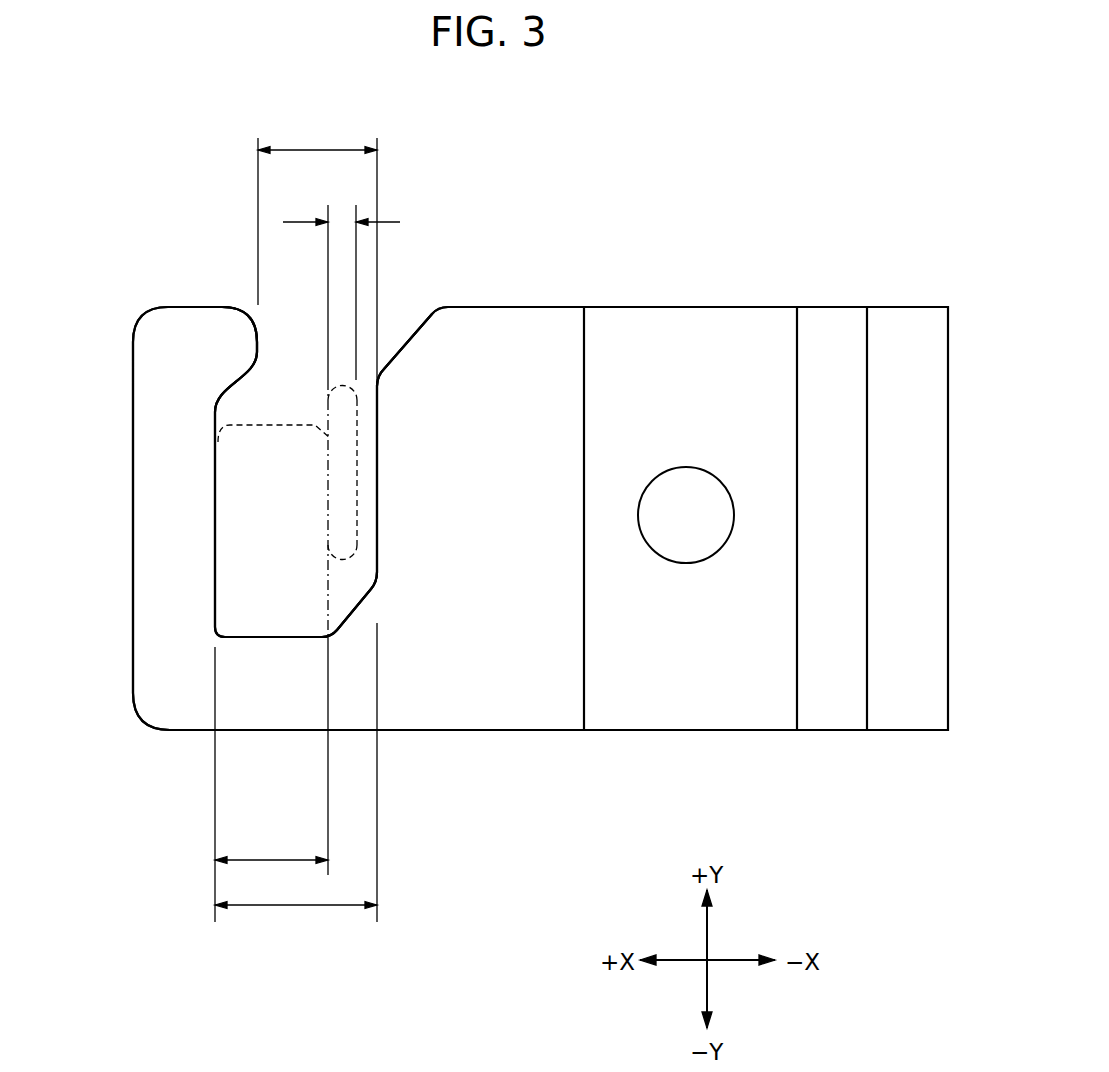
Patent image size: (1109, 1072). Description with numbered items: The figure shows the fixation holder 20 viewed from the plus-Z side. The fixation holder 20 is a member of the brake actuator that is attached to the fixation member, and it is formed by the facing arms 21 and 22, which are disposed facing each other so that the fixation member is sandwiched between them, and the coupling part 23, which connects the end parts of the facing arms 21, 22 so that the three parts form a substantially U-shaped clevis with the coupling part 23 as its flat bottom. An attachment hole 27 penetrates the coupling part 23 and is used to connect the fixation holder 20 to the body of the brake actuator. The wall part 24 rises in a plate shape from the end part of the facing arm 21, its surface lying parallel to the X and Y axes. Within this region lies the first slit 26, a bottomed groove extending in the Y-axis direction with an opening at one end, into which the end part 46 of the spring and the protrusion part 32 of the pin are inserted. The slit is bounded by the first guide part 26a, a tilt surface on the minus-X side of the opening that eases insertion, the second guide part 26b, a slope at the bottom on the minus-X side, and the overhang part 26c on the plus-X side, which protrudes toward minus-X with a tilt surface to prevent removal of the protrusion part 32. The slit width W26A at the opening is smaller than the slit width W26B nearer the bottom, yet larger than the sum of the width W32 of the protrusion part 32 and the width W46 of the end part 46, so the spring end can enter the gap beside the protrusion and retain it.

The fixation holder 20 is at (780, 100).
The facing arm 21 is at (535, 320).
The facing arm 22 is at (828, 337).
The coupling part 23 is at (727, 318).
The wall part 24 is at (147, 611).
The first slit 26 is at (293, 312).
The first guide part 26a is at (405, 342).
The second guide part 26b is at (367, 598).
The overhang part 26c is at (247, 362).
The attachment hole 27 is at (683, 485).
The protrusion part 32 is at (245, 438).
The end part of the spring 46 is at (332, 395).
The slit width at the opening W26A is at (305, 148).
The width of the end part of the spring W46 is at (338, 218).
The width of the protrusion part W32 is at (268, 858).
The slit width near the bottom W26B is at (270, 906).